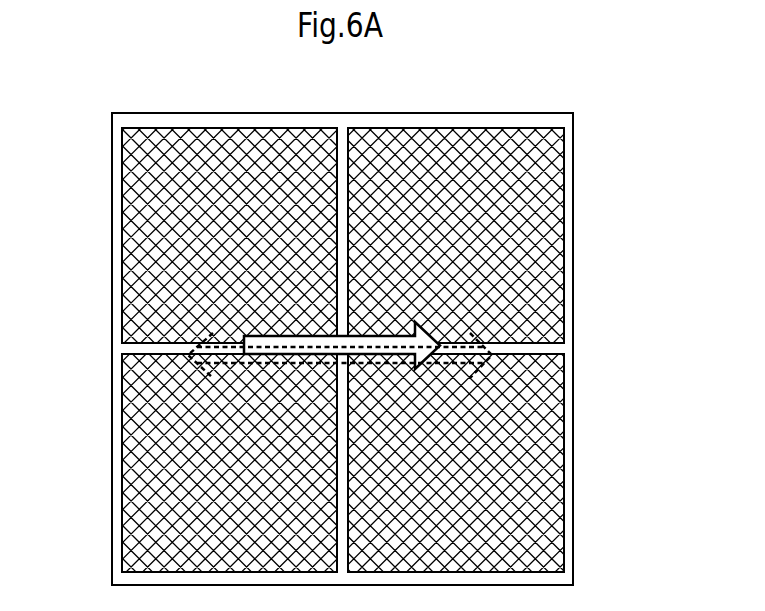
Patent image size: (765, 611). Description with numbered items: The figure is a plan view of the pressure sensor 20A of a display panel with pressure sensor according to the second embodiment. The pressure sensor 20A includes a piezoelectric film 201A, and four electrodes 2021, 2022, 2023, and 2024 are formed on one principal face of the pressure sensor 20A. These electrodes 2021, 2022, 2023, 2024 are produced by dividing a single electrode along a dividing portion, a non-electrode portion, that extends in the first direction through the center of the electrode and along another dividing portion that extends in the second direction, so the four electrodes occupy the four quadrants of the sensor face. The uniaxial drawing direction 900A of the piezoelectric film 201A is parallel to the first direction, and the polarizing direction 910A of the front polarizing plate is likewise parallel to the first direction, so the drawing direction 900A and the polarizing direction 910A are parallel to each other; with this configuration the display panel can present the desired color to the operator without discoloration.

The pressure sensor 20A is at (601, 110).
The piezoelectric film 201A is at (407, 123).
The electrode 2021 is at (128, 530).
The electrode 2022 is at (128, 233).
The electrode 2023 is at (553, 528).
The electrode 2024 is at (553, 216).
The uniaxial drawing direction 900A is at (343, 337).
The polarizing direction 910A is at (483, 365).